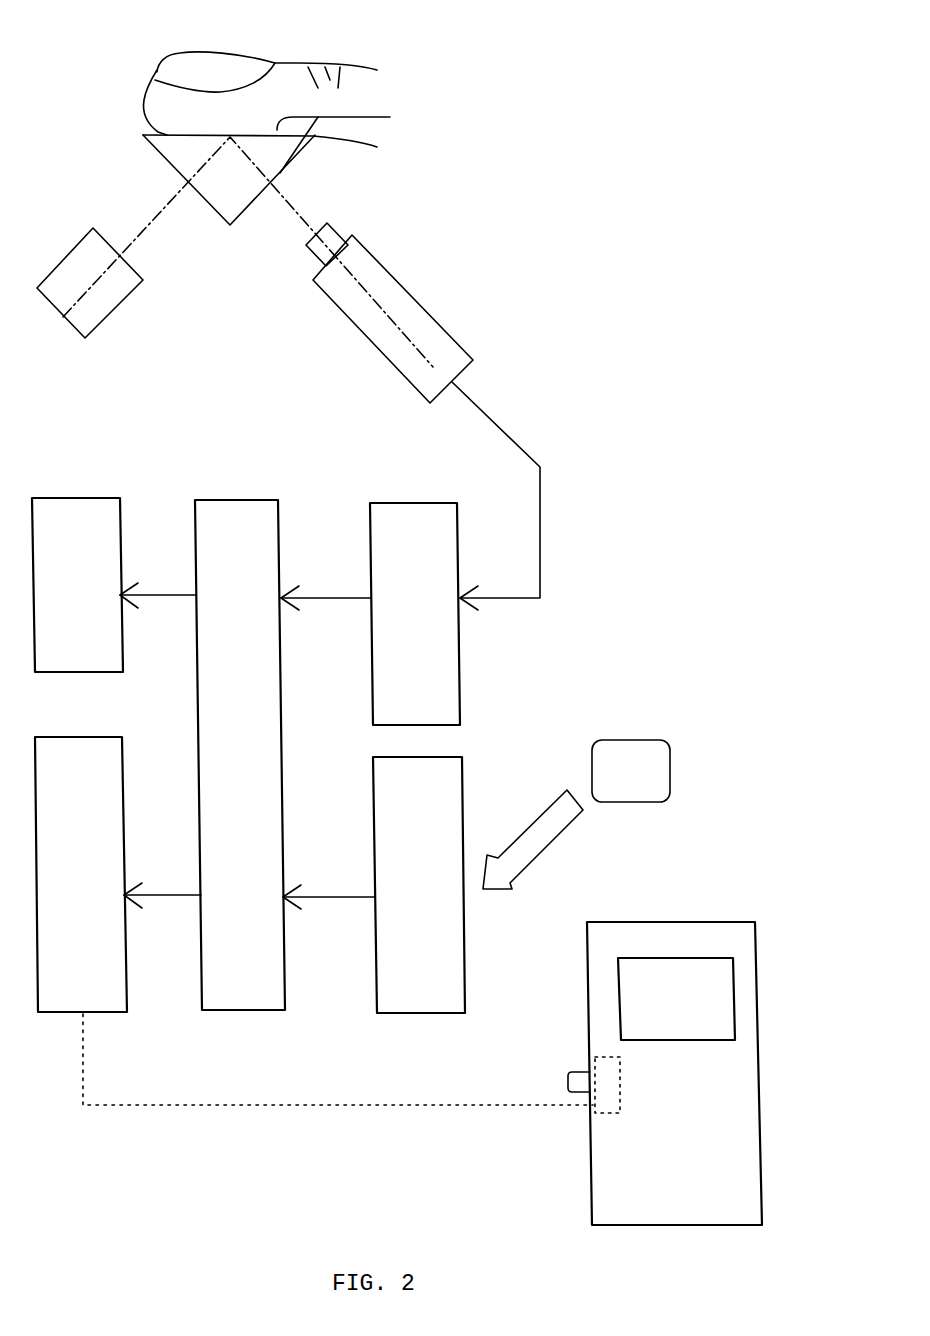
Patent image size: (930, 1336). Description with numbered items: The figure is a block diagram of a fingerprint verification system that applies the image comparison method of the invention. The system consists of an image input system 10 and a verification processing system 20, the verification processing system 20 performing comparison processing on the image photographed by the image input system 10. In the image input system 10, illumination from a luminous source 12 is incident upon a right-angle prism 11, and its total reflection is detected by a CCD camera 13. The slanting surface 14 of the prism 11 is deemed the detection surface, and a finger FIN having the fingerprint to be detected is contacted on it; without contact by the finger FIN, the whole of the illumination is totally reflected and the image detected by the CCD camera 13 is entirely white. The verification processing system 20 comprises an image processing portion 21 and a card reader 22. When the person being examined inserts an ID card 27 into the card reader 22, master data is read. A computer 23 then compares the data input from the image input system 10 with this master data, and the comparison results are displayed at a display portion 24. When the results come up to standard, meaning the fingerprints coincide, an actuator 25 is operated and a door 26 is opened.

The finger FIN is at (335, 60).
The image input system 10 is at (432, 208).
The right-angle prism 11 is at (310, 159).
The luminous source 12 is at (123, 297).
The CCD camera 13 is at (443, 330).
The slanting surface 14 is at (390, 117).
The verification processing system 20 is at (517, 422).
The image processing portion 21 is at (402, 503).
The card reader 22 is at (462, 757).
The computer 23 is at (228, 500).
The display portion 24 is at (72, 495).
The actuator 25 is at (82, 737).
The door 26 is at (657, 922).
The ID card 27 is at (632, 738).